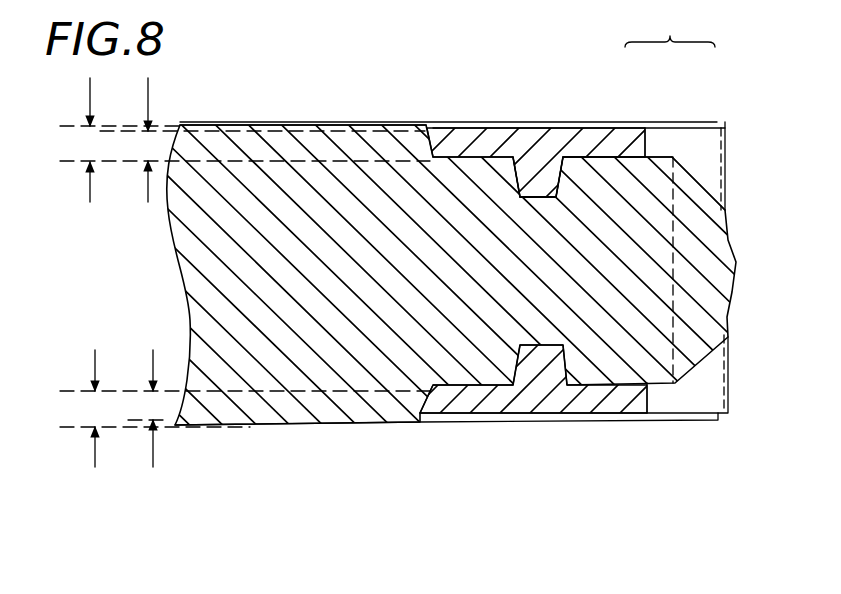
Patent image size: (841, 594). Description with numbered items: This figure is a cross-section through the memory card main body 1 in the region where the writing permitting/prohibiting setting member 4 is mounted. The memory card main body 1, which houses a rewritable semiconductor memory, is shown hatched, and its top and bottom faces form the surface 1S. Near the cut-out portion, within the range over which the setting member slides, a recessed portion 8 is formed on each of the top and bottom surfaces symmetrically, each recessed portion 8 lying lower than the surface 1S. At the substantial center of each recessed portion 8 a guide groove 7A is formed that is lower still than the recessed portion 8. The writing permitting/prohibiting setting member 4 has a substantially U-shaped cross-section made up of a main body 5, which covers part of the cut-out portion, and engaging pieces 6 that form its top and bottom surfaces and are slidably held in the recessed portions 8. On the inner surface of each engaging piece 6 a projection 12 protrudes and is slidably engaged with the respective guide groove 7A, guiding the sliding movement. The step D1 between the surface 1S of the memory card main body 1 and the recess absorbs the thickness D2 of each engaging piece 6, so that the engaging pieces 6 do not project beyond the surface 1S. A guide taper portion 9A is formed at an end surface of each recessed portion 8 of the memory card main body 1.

The memory card main body 1 is at (370, 173).
The surface of the memory card main body 1S is at (305, 125).
The recessed portion 8 is at (465, 153).
The projection 12 is at (533, 173).
The guide groove 7A is at (550, 177).
The engaging piece 6 is at (615, 137).
The main body 5 is at (688, 153).
The writing permitting/prohibiting setting member 4 is at (670, 23).
The guide taper portion 9A is at (705, 170).
The step D1 is at (90, 147).
The thickness of the engaging piece D2 is at (148, 147).